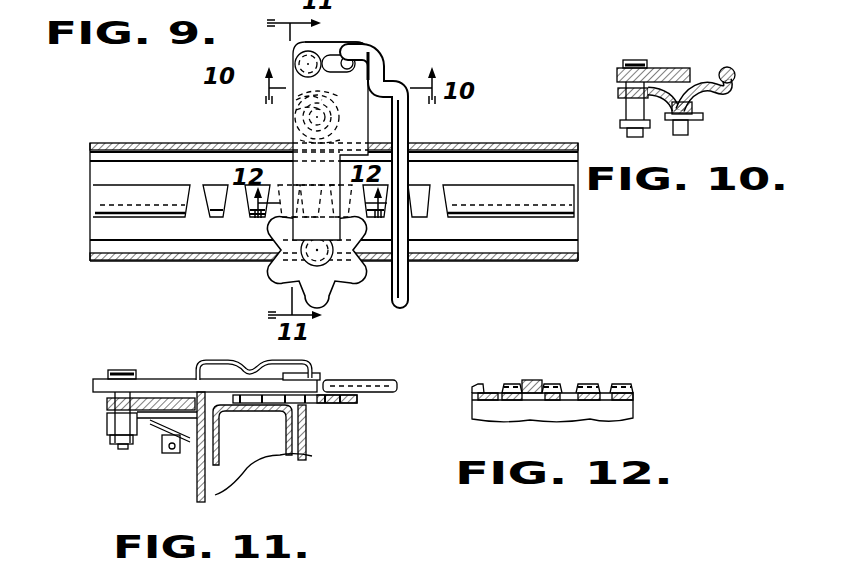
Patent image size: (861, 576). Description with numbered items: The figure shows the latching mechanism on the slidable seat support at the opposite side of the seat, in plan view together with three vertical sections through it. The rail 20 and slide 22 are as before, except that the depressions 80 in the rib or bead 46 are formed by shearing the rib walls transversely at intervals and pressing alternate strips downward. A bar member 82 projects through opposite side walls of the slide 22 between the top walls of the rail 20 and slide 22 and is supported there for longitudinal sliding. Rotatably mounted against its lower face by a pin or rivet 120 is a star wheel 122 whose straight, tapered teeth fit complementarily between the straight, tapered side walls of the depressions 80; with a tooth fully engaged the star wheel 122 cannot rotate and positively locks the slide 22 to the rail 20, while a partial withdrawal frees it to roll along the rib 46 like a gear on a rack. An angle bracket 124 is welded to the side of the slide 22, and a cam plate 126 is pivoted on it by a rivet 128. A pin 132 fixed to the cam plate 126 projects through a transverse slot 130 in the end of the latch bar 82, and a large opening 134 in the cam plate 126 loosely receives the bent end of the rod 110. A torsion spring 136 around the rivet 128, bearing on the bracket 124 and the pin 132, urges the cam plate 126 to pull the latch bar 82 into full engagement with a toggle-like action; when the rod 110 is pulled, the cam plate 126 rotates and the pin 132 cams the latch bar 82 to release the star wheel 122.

In FIG. 9, the rail 20 is at (558, 262).
In FIG. 11, the rail 20 is at (307, 455).
In FIG. 12, the rail 20 is at (627, 407).
In FIG. 9, the slide 22 is at (502, 264).
In FIG. 11, the slide 22 is at (307, 443).
In FIG. 9, the rib or bead 46 is at (422, 198).
In FIG. 12, the rib or bead 46 is at (590, 385).
In FIG. 9, the depression 80 is at (192, 216).
In FIG. 12, the depression 80 is at (490, 386).
In FIG. 9, the bar member (latch bar) 82 is at (266, 218).
In FIG. 10, the bar member (latch bar) 82 is at (660, 68).
In FIG. 11, the bar member (latch bar) 82 is at (185, 378).
In FIG. 9, the rod 110 is at (411, 296).
In FIG. 10, the rod 110 is at (733, 73).
In FIG. 11, the rod 110 is at (378, 382).
In FIG. 9, the pin or rivet 120 is at (333, 283).
In FIG. 11, the pin or rivet 120 is at (312, 373).
In FIG. 9, the star wheel 122 is at (270, 281).
In FIG. 11, the star wheel 122 is at (345, 406).
In FIG. 12, the star wheel 122 is at (532, 380).
In FIG. 11, the angle bracket 124 is at (198, 478).
In FIG. 9, the cam plate 126 is at (372, 80).
In FIG. 10, the cam plate 126 is at (620, 92).
In FIG. 11, the cam plate 126 is at (108, 405).
In FIG. 9, the rivet (pin) 128 is at (293, 122).
In FIG. 11, the rivet (pin) 128 is at (163, 456).
In FIG. 9, the slot 130 is at (337, 50).
In FIG. 9, the pin 132 is at (296, 55).
In FIG. 10, the pin 132 is at (630, 60).
In FIG. 11, the pin 132 is at (125, 368).
In FIG. 9, the opening 134 is at (352, 57).
In FIG. 9, the torsion spring 136 is at (293, 104).
In FIG. 10, the torsion spring 136 is at (633, 105).
In FIG. 11, the torsion spring 136 is at (140, 432).